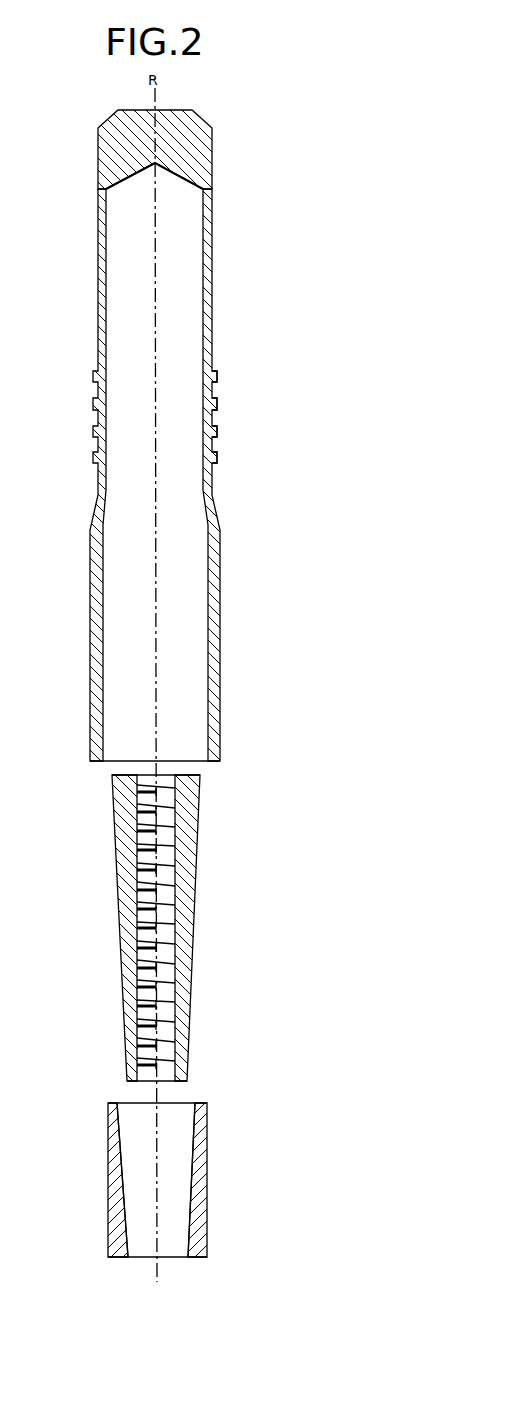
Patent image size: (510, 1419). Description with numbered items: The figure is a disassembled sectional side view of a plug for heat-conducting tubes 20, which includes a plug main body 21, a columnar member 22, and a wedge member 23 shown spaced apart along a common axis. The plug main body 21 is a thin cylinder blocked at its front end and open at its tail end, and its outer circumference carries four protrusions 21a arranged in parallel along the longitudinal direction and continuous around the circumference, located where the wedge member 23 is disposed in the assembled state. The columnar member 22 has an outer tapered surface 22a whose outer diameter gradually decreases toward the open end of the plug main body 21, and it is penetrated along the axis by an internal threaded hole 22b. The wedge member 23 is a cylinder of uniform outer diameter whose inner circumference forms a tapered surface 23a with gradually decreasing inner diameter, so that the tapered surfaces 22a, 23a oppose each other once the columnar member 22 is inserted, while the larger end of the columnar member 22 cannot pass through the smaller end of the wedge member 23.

The plug for heat-conducting tubes 20 is at (324, 147).
The plug main body 21 is at (212, 275).
The protrusions 21a is at (217, 375).
The columnar member 22 is at (199, 928).
The tapered surface 22a is at (196, 860).
The internal threaded hole 22b is at (180, 929).
The wedge member 23 is at (198, 1180).
The tapered surface 23a is at (193, 1203).